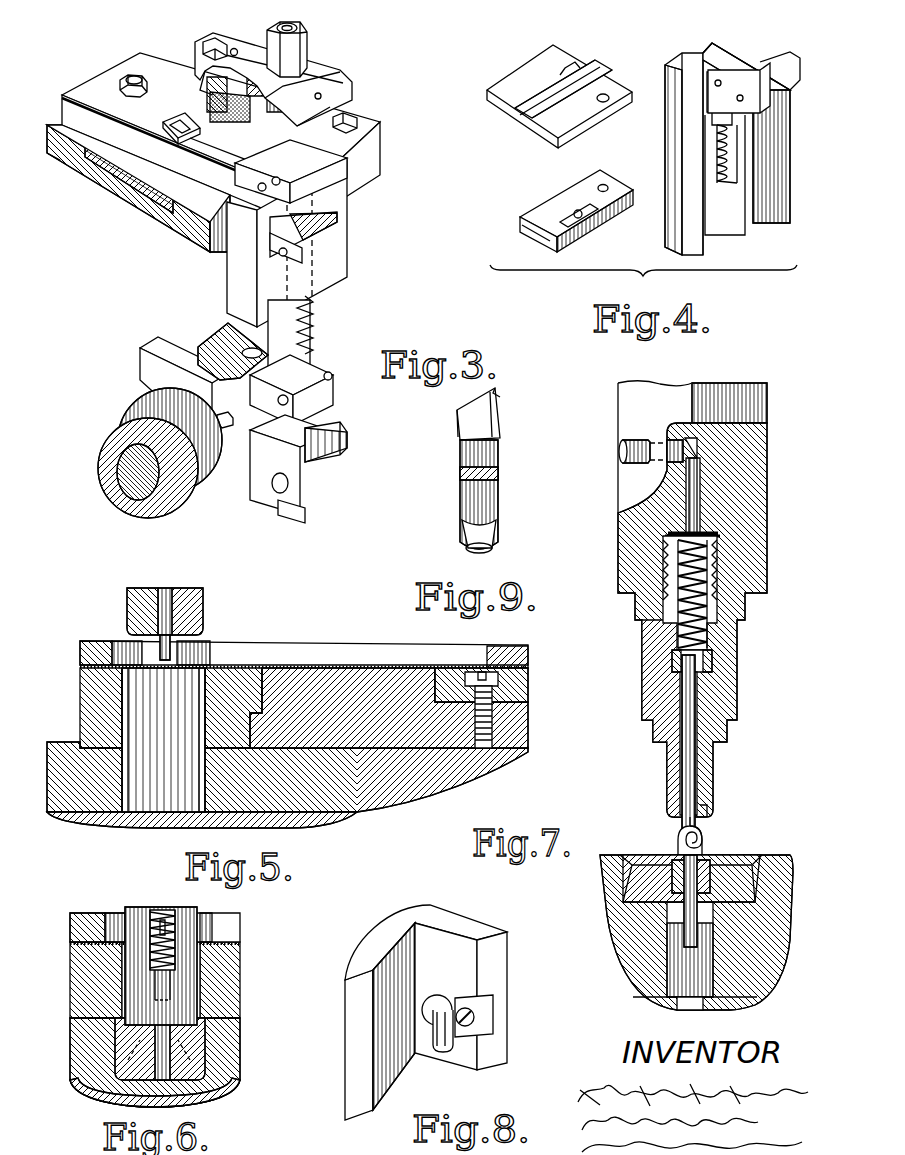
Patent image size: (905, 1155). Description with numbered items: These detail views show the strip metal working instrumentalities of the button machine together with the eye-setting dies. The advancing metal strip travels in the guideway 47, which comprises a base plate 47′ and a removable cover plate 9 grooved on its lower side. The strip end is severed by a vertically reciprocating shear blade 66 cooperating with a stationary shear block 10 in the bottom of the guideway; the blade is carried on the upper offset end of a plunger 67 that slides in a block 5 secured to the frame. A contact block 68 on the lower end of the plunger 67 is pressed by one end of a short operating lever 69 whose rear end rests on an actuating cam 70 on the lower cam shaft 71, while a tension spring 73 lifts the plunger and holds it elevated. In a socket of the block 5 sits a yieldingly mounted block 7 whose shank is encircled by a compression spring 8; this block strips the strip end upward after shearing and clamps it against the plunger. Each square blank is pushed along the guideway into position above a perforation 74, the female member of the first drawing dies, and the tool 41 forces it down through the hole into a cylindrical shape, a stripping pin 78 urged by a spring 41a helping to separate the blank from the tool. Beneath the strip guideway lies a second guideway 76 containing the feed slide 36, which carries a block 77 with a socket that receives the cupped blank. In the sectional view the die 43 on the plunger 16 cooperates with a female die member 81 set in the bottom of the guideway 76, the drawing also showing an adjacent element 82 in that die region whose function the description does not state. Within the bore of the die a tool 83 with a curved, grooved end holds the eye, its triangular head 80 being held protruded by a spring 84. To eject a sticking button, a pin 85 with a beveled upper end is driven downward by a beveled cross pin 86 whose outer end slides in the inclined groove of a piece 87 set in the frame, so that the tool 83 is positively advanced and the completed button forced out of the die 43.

In FIG. 3, the block 5 is at (332, 245).
In FIG. 4, the block 5 is at (675, 147).
In FIG. 4, the yieldingly mounted block 7 is at (725, 113).
In FIG. 4, the compression spring 8 is at (737, 175).
In FIG. 3, the cover plate 9 is at (152, 72).
In FIG. 4, the cover plate 9 is at (540, 65).
In FIG. 5, the cover plate 9 is at (507, 650).
In FIG. 6, the cover plate 9 is at (222, 920).
In FIG. 4, the stationary shear block 10 is at (565, 213).
In FIG. 5, the stationary shear block 10 is at (510, 693).
In FIG. 7, the plunger 16 is at (752, 393).
In FIG. 3, the feed slide 36 is at (122, 162).
In FIG. 5, the feed slide 36 is at (325, 783).
In FIG. 5, the tool 41 is at (190, 610).
In FIG. 6, the tool 41 is at (177, 952).
In FIG. 6, the spring 41a is at (173, 930).
In FIG. 7, the die 43 is at (712, 787).
In FIG. 4, the guideway 47 is at (568, 62).
In FIG. 3, the base plate 47′ is at (210, 198).
In FIG. 4, the base plate 47′ is at (537, 228).
In FIG. 5, the base plate 47′ is at (512, 728).
In FIG. 3, the shear blade 66 is at (230, 222).
In FIG. 4, the shear blade 66 is at (730, 90).
In FIG. 3, the plunger 67 is at (293, 313).
In FIG. 4, the plunger 67 is at (693, 63).
In FIG. 3, the contact block 68 is at (307, 428).
In FIG. 3, the operating lever 69 is at (173, 357).
In FIG. 3, the actuating cam 70 is at (127, 397).
In FIG. 3, the lower cam shaft 71 is at (130, 480).
In FIG. 3, the tension spring 73 is at (317, 327).
In FIG. 5, the perforation 74 is at (145, 705).
In FIG. 6, the perforation 74 is at (122, 987).
In FIG. 3, the second guideway 76 is at (97, 153).
In FIG. 7, the second guideway 76 is at (607, 867).
In FIG. 5, the second guideway 76 is at (323, 813).
In FIG. 6, the second guideway 76 is at (223, 1097).
In FIG. 5, the block 77 is at (97, 787).
In FIG. 6, the block 77 is at (80, 1070).
In FIG. 5, the stripping pin 78 is at (202, 584).
In FIG. 6, the stripping pin 78 is at (170, 1043).
In FIG. 9, the triangular head 80 is at (488, 408).
In FIG. 7, the triangular head 80 is at (700, 654).
In FIG. 7, the female die member 81 is at (703, 867).
In FIG. 7, the insert 82 is at (688, 881).
In FIG. 9, the tool 83 is at (492, 498).
In FIG. 7, the tool 83 is at (692, 765).
In FIG. 7, the spring 84 is at (708, 633).
In FIG. 7, the pin 85 is at (693, 502).
In FIG. 7, the cross pin 86 is at (627, 447).
In FIG. 8, the piece 87 is at (487, 1020).